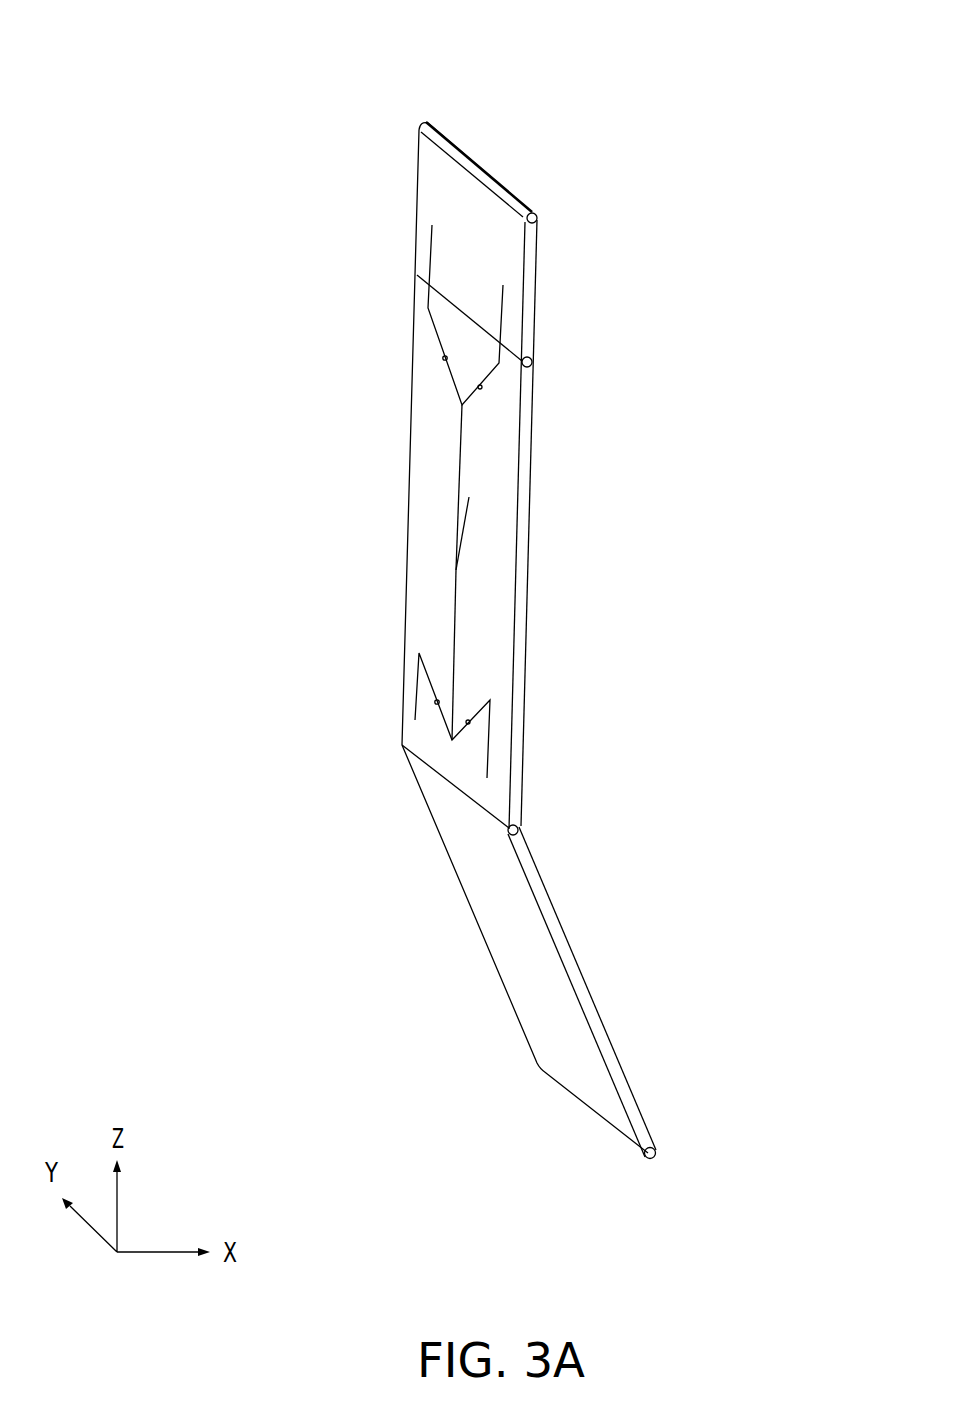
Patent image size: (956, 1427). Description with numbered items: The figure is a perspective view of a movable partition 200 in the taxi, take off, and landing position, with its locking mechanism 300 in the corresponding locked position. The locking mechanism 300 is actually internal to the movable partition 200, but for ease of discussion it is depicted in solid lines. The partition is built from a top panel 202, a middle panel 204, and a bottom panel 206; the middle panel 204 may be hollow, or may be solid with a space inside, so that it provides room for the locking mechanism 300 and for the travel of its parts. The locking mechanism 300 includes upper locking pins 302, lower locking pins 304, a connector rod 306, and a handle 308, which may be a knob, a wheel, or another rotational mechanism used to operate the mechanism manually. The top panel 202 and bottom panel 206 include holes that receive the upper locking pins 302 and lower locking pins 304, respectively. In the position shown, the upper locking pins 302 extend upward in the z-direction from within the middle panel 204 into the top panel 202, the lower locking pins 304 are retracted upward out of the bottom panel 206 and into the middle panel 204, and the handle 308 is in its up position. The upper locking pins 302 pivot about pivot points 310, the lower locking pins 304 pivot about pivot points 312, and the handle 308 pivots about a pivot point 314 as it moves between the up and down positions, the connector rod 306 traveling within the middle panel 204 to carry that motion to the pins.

The locking mechanism 300 is at (218, 106).
The movable partition 200 is at (541, 163).
The top panel 202 is at (527, 288).
The middle panel 204 is at (527, 607).
The bottom panel 206 is at (583, 1002).
The upper locking pins 302 is at (437, 333).
The lower locking pins 304 is at (417, 695).
The connector rod 306 is at (453, 612).
The handle 308 is at (468, 513).
The pivot points 310 is at (445, 360).
The pivot points 312 is at (437, 702).
The pivot point 314 is at (455, 570).